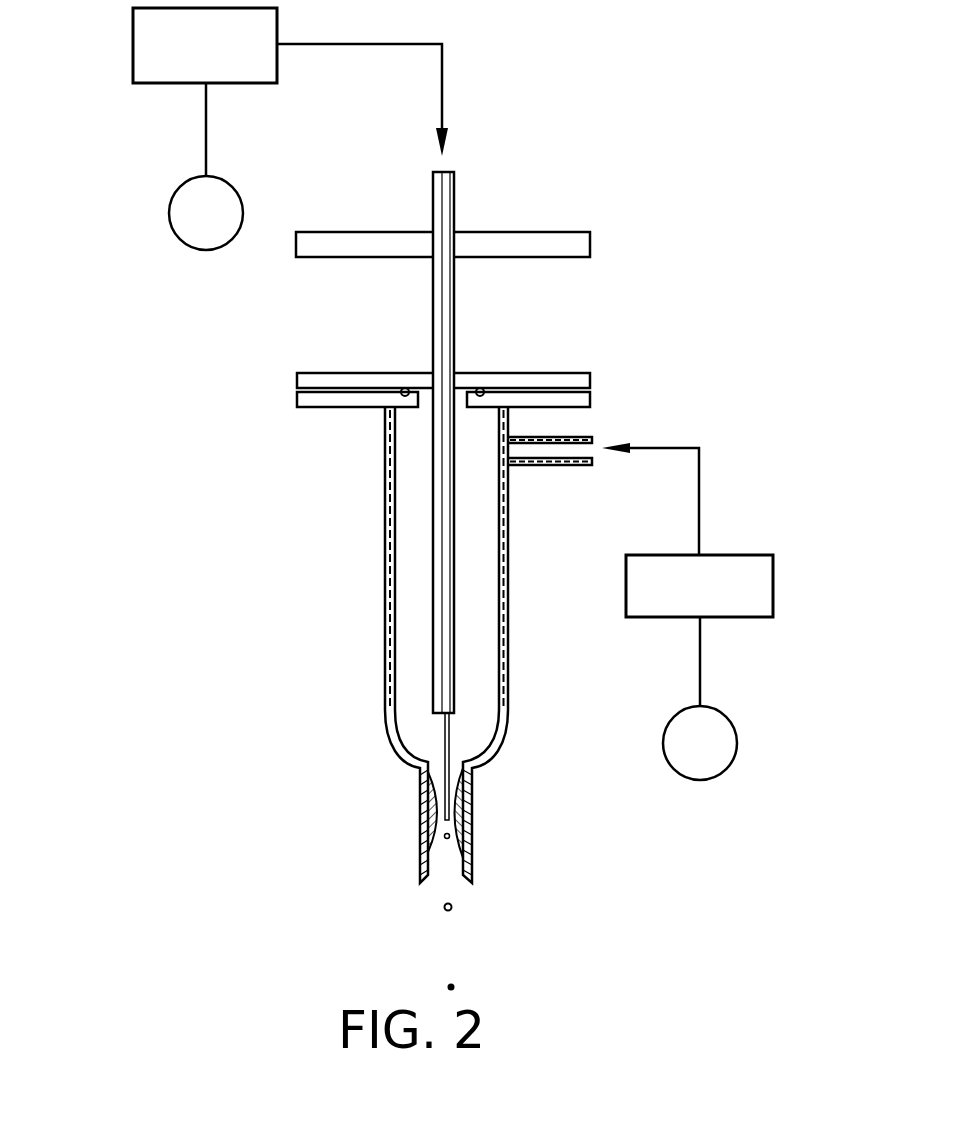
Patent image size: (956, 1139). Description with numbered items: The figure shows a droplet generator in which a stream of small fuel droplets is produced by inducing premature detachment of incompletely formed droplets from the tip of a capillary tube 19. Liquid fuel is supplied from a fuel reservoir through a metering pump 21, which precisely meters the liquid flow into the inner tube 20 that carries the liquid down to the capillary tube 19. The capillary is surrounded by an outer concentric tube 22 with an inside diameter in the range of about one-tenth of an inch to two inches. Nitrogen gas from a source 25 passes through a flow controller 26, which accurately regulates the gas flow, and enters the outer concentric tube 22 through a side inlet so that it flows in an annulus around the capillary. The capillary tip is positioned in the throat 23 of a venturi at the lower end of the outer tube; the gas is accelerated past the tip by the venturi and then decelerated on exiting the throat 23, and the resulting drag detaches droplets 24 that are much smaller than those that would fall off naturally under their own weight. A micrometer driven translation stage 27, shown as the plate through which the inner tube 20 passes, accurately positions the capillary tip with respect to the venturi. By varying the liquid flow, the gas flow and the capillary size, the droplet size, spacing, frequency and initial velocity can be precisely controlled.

The capillary tube 19 is at (450, 719).
The inner fuel tube 20 is at (452, 515).
The metering pump 21 is at (278, 22).
The outer concentric tube 22 is at (508, 607).
The throat of the venturi 23 is at (470, 810).
The fuel droplet 24 is at (468, 853).
The nitrogen gas source 25 is at (712, 772).
The flow controller 26 is at (762, 555).
The micrometer driven translation stage 27 is at (485, 232).